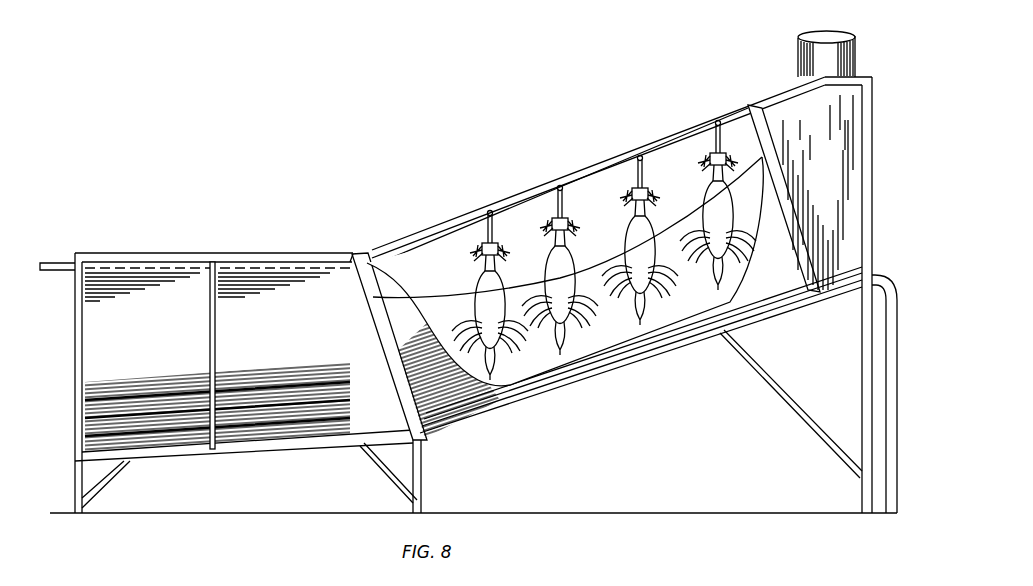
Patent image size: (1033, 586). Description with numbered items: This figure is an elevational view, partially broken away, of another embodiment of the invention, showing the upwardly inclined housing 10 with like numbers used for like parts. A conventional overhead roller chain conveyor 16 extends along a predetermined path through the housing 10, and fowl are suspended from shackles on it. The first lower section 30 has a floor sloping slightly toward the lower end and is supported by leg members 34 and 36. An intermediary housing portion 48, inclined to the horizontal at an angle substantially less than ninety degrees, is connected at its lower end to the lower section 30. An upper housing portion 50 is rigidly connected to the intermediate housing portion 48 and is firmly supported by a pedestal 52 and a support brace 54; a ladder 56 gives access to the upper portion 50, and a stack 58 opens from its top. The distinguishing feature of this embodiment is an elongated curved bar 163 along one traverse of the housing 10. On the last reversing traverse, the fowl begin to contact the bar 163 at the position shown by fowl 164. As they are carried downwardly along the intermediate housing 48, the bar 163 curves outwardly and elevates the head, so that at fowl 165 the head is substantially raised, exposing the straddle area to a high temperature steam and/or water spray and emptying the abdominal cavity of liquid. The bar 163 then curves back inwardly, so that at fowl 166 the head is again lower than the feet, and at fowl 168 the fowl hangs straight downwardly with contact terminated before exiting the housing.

The housing 10 is at (373, 230).
The overhead roller chain conveyor 16 is at (54, 263).
The first lower section 30 is at (228, 462).
The leg member 34 is at (75, 488).
The leg member 36 is at (421, 473).
The intermediary housing portion 48 is at (565, 405).
The upper housing portion 50 is at (775, 80).
The pedestal 52 is at (862, 406).
The support brace 54 is at (817, 436).
The ladder 56 is at (888, 278).
The stack 58 is at (857, 60).
The elongated curved bar 163 is at (427, 297).
The fowl 164 is at (717, 121).
The fowl 165 is at (636, 156).
The fowl 166 is at (553, 186).
The fowl 168 is at (478, 211).